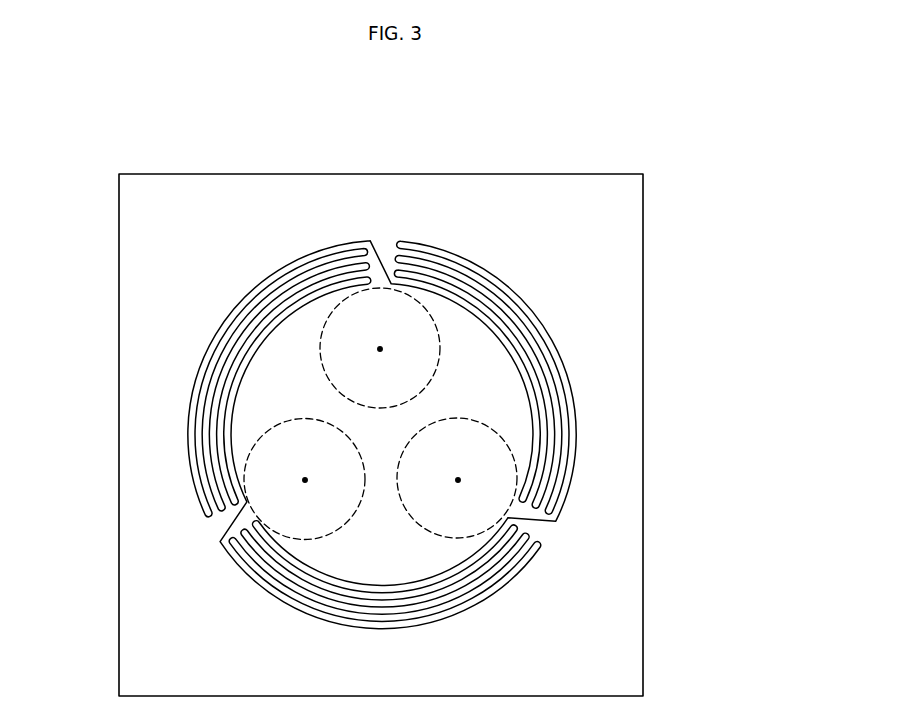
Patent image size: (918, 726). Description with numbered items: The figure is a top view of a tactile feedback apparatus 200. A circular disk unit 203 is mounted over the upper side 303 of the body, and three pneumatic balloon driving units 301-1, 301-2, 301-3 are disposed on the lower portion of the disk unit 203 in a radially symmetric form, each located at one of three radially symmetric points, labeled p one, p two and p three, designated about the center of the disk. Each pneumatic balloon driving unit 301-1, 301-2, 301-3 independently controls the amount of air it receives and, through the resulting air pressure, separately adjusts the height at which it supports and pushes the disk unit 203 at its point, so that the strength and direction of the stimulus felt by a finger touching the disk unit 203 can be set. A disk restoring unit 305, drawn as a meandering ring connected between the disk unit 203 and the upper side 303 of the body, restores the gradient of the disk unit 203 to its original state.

The tactile feedback apparatus 200 is at (644, 124).
The disk unit 203 is at (505, 390).
The upper side of a body 303 is at (381, 435).
The disk restoring unit 305 is at (483, 283).
The pneumatic balloon driving unit 301-1 is at (488, 483).
The pneumatic balloon driving unit 301-2 is at (273, 483).
The pneumatic balloon driving unit 301-3 is at (379, 310).